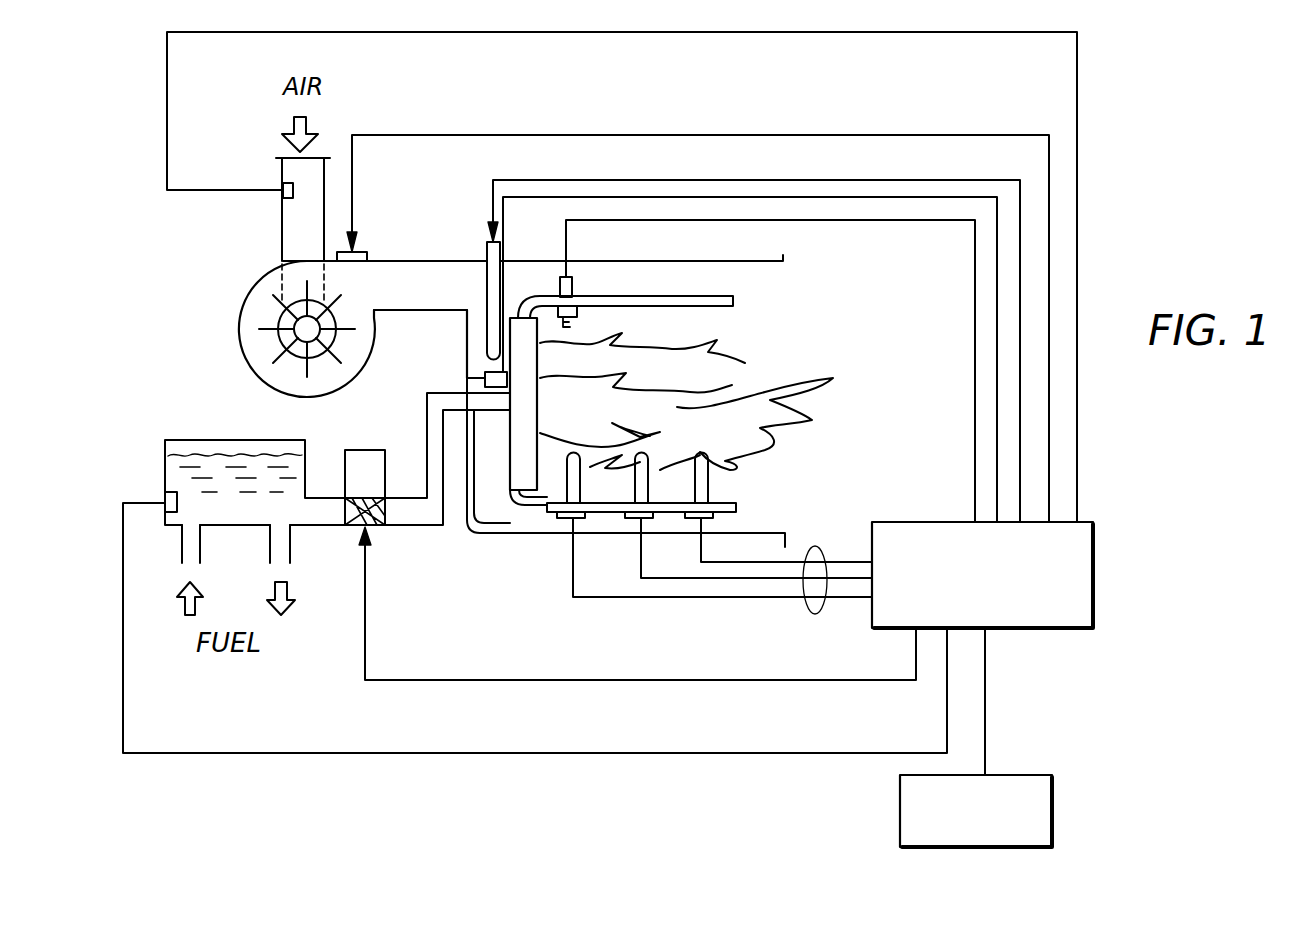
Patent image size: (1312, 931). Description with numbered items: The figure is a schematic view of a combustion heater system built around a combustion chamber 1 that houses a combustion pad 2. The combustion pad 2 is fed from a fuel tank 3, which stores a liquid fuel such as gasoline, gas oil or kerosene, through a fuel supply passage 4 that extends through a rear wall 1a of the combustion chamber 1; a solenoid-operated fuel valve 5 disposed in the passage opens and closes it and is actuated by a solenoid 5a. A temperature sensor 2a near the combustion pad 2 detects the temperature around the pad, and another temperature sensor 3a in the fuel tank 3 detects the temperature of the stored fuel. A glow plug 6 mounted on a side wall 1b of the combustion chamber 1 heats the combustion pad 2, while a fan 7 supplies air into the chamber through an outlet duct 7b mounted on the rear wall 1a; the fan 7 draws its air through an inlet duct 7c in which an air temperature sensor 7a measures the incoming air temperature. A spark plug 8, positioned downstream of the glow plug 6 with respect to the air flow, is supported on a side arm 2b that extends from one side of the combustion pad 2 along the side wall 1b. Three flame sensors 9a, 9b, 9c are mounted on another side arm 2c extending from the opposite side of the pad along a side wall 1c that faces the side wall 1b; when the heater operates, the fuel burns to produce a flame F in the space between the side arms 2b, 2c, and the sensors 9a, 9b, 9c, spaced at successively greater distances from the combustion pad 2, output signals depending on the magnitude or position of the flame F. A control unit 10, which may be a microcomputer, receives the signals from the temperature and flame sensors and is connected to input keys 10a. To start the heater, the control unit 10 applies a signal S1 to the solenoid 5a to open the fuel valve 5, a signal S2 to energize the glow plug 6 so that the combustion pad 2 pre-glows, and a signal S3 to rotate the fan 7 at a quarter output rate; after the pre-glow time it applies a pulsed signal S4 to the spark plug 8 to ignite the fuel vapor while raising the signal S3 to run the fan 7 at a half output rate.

The combustion chamber 1 is at (511, 520).
The rear wall 1a is at (462, 479).
The side wall 1b is at (735, 260).
The side wall 1c is at (515, 534).
The combustion pad 2 is at (510, 487).
The temperature sensor 2a is at (468, 378).
The side arm 2b is at (735, 301).
The side arm 2c is at (736, 503).
The fuel tank 3 is at (165, 470).
The temperature sensor 3a is at (165, 493).
The fuel supply passage 4 is at (403, 521).
The solenoid-operated fuel valve 5 is at (365, 510).
The solenoid 5a is at (345, 452).
The glow plug 6 is at (487, 270).
The fan 7 is at (236, 298).
The air temperature sensor 7a is at (283, 190).
The outlet duct 7b is at (417, 312).
The inlet duct 7c is at (282, 221).
The spark plug 8 is at (577, 292).
The flame sensor 9a is at (548, 513).
The flame sensor 9b is at (612, 513).
The flame sensor 9c is at (668, 520).
The control unit 10 is at (1062, 634).
The input keys 10a is at (1052, 806).
The signal S1 is at (640, 612).
The signal S2 is at (693, 181).
The signal S3 is at (633, 135).
The pulsed signal S4 is at (900, 198).
The flame F is at (732, 378).